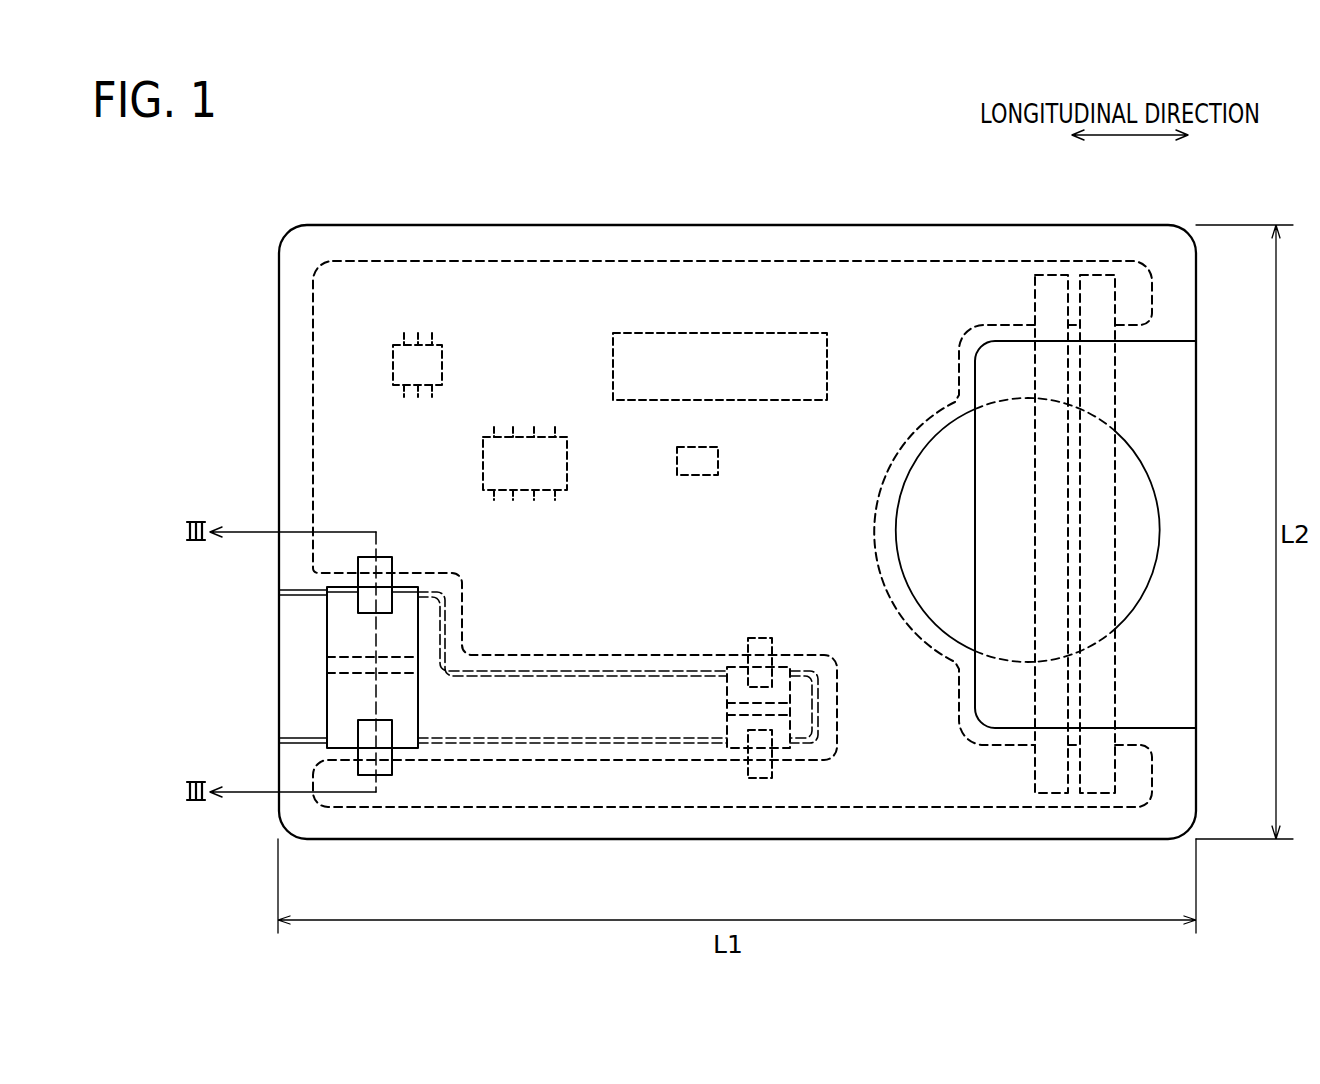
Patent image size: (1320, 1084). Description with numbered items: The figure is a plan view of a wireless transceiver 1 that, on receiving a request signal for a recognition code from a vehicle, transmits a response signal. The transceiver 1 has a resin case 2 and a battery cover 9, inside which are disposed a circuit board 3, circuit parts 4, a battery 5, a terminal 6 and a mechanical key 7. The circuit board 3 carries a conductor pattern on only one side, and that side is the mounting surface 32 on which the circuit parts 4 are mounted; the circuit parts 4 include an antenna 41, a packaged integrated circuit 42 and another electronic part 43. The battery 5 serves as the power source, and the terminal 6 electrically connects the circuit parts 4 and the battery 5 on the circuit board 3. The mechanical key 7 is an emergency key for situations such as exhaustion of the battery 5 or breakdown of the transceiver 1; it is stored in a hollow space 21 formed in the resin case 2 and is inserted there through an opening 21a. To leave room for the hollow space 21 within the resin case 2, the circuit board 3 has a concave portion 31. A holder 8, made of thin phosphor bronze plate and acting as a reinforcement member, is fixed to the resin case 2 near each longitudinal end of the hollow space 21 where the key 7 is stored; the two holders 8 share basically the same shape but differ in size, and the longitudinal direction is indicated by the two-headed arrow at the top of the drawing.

The transceiver 1 is at (178, 197).
The resin case 2 is at (1152, 250).
The circuit board 3 is at (368, 277).
The mounting surface 32 is at (382, 345).
The circuit parts 4 is at (588, 166).
The antenna 41 is at (671, 333).
The packaged integrated circuit 42 is at (560, 432).
The other electronic part 43 is at (707, 447).
The battery 5 is at (1130, 483).
The terminal 6 is at (1097, 275).
The mechanical key 7 is at (292, 668).
The holder 8 is at (338, 623).
The battery cover 9 is at (1160, 385).
The hollow space 21 is at (442, 740).
The opening 21a is at (290, 738).
The concave portion 31 is at (325, 584).